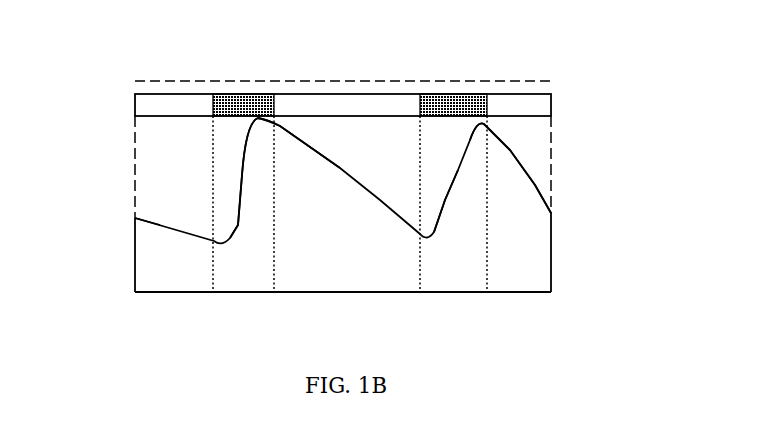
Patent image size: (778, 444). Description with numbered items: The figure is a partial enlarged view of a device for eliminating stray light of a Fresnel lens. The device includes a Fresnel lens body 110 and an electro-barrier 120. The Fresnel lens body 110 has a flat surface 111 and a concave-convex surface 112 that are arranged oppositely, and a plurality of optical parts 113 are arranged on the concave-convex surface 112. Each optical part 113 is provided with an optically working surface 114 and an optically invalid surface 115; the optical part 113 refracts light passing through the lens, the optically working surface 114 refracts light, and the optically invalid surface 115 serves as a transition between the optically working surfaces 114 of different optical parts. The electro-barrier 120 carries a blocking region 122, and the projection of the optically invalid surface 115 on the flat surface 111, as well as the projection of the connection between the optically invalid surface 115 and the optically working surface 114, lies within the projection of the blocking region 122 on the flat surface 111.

The Fresnel lens body 110 is at (540, 258).
The flat surface 111 is at (393, 293).
The concave-convex surface 112 is at (152, 221).
The optical part 113 is at (412, 123).
The optically working surface 114 is at (340, 176).
The optically invalid surface 115 is at (241, 162).
The electro-barrier 120 is at (551, 112).
The blocking region 122 is at (469, 93).